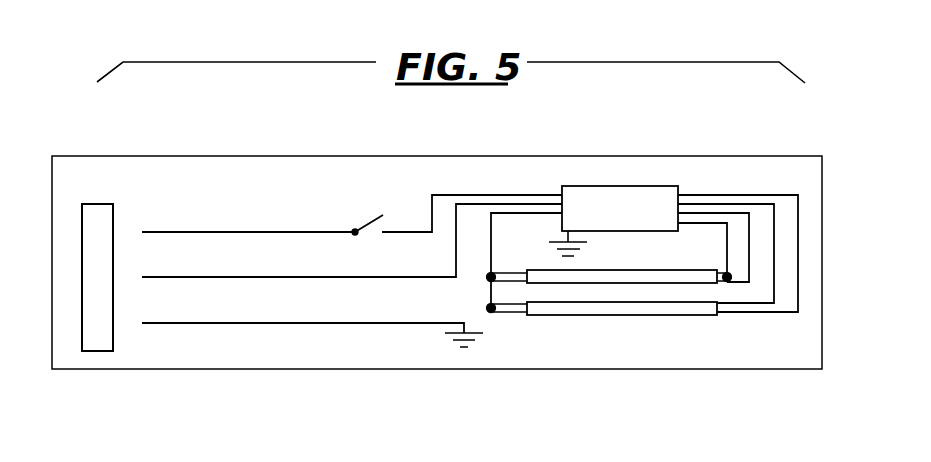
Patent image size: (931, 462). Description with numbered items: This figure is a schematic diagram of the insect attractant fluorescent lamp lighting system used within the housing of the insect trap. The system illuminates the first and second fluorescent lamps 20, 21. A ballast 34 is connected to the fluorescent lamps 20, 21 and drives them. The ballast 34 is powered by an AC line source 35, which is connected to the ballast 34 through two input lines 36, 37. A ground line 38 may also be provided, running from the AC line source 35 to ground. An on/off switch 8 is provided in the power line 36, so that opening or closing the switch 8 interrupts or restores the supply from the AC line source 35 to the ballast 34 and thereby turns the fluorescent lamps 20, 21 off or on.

The AC line source 35 is at (92, 214).
The input line 36 is at (235, 232).
The on/off switch 8 is at (367, 222).
The input line 37 is at (220, 277).
The ground line 38 is at (308, 323).
The ballast 34 is at (610, 198).
The first fluorescent lamp 20 is at (614, 278).
The second fluorescent lamp 21 is at (637, 310).